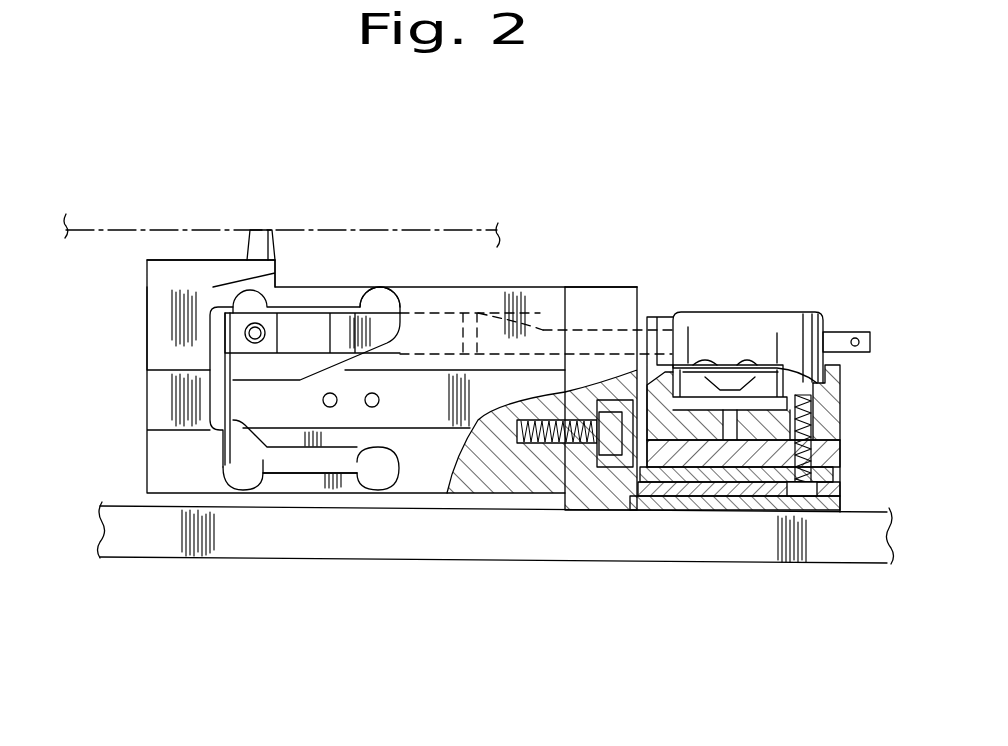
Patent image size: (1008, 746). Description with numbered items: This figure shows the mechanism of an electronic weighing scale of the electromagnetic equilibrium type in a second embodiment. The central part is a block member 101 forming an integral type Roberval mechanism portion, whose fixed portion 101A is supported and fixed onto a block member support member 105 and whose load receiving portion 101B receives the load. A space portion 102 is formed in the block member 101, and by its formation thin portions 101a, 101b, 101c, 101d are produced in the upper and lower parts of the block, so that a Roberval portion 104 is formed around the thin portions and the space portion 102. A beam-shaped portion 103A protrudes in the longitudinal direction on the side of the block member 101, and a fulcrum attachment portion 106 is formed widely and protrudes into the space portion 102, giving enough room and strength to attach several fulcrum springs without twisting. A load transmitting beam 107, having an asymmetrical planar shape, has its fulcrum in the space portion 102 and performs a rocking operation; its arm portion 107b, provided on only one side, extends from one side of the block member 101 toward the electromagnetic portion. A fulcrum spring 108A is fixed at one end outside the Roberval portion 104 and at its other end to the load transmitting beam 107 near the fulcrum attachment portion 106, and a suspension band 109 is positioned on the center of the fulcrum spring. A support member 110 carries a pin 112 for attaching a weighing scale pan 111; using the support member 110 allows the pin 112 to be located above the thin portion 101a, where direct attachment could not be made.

The block member 101 is at (405, 272).
The fixed portion 101A is at (549, 287).
The load receiving portion 101B is at (167, 340).
The thin portion 101a is at (240, 362).
The thin portion 101b is at (383, 332).
The thin portion 101c is at (247, 492).
The thin portion 101d is at (378, 493).
The space portion 102 is at (366, 490).
The beam-shaped portion 103A is at (437, 400).
The Roberval portion 104 is at (300, 487).
The block member support member 105 is at (606, 290).
The fulcrum attachment portion 106 is at (287, 413).
The load transmitting beam 107 is at (405, 287).
The arm portion 107b is at (584, 287).
The fulcrum spring 108A is at (231, 305).
The suspension band 109 is at (228, 402).
The support member 110 is at (177, 275).
The weighing scale pan 111 is at (91, 224).
The pin 112 is at (259, 236).